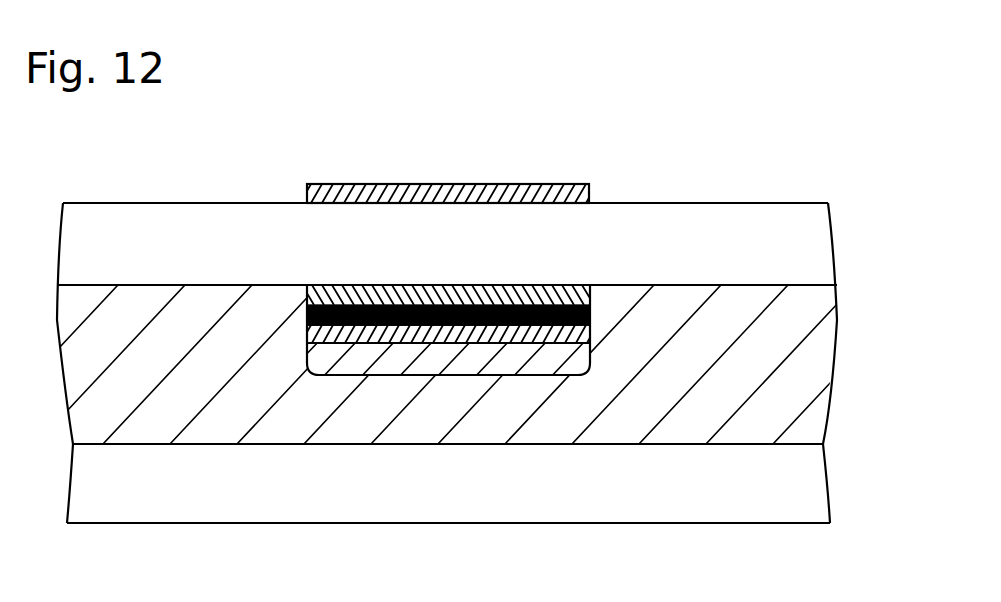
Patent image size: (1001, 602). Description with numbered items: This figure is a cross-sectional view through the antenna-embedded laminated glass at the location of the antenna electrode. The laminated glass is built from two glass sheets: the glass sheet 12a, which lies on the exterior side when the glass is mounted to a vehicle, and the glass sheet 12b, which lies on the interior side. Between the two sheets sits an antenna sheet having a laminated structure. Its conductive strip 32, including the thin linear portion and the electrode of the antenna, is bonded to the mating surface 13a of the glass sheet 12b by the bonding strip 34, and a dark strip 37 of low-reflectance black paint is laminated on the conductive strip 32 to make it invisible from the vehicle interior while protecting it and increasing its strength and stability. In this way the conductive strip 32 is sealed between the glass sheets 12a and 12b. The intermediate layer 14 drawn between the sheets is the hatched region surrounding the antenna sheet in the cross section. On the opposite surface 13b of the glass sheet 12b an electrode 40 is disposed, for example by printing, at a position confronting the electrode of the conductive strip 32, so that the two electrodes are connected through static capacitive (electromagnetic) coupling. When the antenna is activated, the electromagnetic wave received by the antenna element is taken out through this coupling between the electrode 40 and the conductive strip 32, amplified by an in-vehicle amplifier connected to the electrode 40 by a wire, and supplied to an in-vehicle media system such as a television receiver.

The glass sheet 12a is at (810, 484).
The glass sheet 12b is at (808, 243).
The mating surface 13a is at (243, 285).
The opposite surface 13b is at (660, 203).
The insulating layer 14 is at (810, 364).
The conductive strip 32 is at (523, 367).
The bonding strip 34 is at (362, 343).
The dark strip 37 is at (455, 330).
The electrode 40 is at (492, 184).